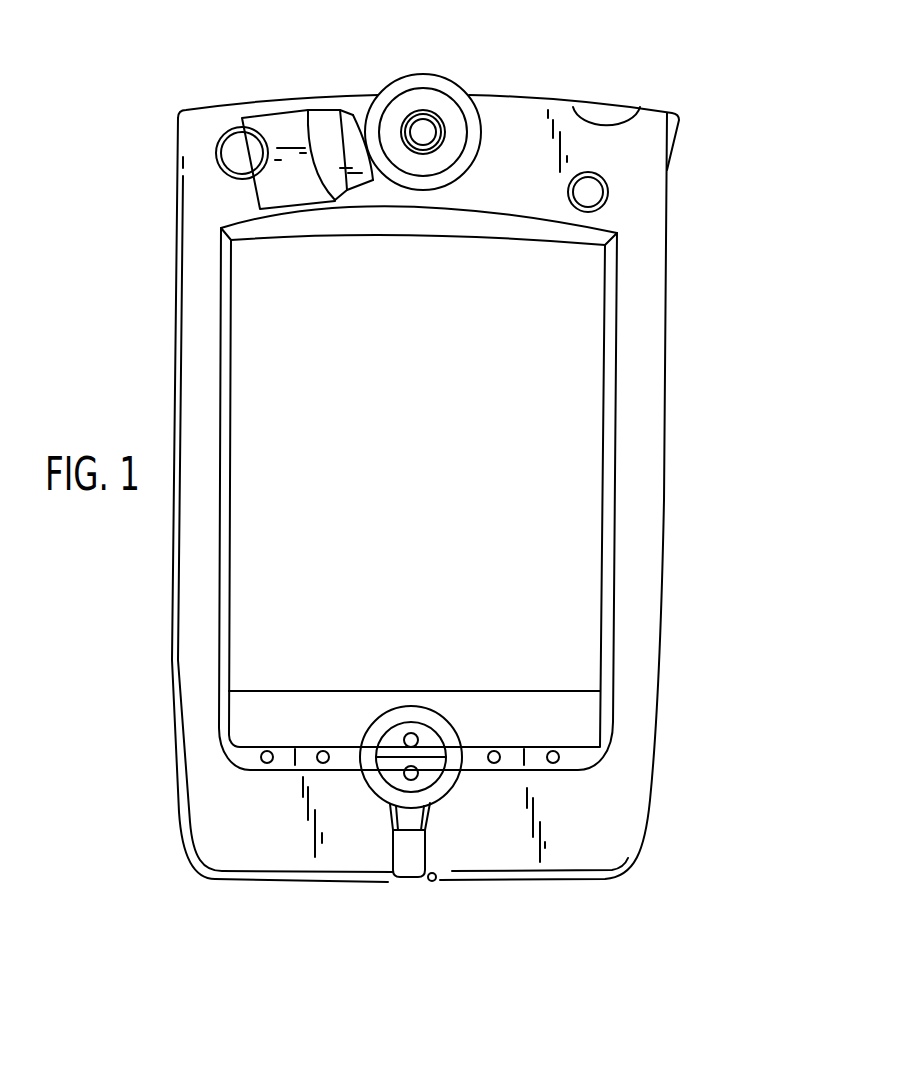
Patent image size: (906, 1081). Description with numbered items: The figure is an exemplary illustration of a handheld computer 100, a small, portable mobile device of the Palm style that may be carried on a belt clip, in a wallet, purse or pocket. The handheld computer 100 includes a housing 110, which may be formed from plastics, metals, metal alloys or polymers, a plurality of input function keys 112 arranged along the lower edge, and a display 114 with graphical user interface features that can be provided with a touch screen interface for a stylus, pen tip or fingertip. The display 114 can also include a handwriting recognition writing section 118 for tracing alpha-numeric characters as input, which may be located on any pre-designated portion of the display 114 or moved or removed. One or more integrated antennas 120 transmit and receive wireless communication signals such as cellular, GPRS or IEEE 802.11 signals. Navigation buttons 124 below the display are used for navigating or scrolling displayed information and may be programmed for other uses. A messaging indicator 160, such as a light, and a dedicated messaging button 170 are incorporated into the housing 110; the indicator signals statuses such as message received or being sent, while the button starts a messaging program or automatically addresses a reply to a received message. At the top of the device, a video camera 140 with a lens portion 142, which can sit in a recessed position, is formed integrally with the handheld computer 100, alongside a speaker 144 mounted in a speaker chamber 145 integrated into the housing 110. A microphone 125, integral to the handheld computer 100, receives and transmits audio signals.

The handheld computer 100 is at (718, 323).
The housing 110 is at (197, 267).
The input function keys 112 is at (559, 763).
The display 114 is at (427, 416).
The writing section 118 is at (427, 580).
The integrated antenna 120 is at (521, 224).
The navigation buttons 124 is at (431, 772).
The microphone 125 is at (435, 883).
The video camera 140 is at (439, 86).
The lens portion 142 is at (419, 128).
The speaker 144 is at (332, 180).
The speaker chamber 145 is at (270, 117).
The messaging indicator 160 is at (603, 178).
The messaging button 170 is at (588, 192).